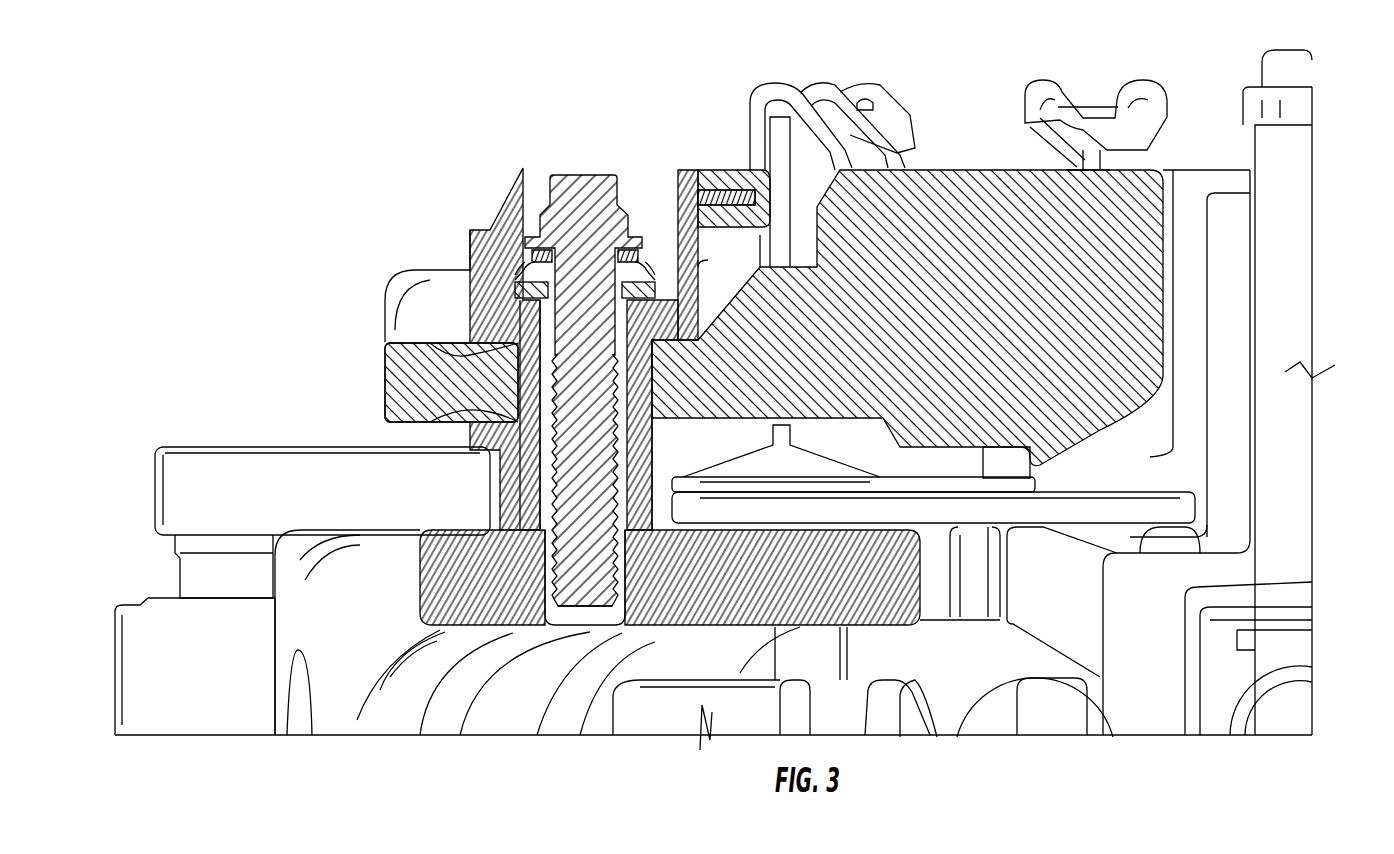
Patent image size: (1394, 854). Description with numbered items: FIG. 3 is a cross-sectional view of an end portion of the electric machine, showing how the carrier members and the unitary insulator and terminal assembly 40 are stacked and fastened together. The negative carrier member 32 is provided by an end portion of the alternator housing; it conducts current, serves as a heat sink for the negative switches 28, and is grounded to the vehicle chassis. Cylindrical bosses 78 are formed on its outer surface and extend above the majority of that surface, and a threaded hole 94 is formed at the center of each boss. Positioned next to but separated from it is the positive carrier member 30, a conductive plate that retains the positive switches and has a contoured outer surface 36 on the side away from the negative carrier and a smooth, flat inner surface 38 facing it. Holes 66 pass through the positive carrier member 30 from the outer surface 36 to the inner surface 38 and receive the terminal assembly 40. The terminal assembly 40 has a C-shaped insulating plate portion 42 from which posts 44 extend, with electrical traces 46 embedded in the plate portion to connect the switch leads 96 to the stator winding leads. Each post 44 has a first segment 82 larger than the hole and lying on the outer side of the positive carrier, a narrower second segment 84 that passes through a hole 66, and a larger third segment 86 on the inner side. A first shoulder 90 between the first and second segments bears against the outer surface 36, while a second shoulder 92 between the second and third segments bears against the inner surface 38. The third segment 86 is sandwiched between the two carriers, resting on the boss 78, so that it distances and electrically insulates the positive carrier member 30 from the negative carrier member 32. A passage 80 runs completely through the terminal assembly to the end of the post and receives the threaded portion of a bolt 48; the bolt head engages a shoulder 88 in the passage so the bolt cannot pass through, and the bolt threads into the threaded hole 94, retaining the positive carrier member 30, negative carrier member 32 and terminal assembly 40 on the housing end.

The negative switches 28 is at (1135, 488).
The positive carrier member 30 is at (951, 253).
The negative carrier member 32 is at (1147, 617).
The outer surface 36 is at (440, 337).
The inner surface 38 is at (414, 428).
The terminal assembly 40 is at (716, 213).
The plate portion 42 is at (972, 172).
The posts 44 is at (513, 377).
The electrical traces 46 is at (730, 200).
The bolt 48 is at (586, 602).
The holes 66 is at (758, 318).
The bosses 78 is at (651, 655).
The passages 80 is at (585, 442).
The first segment 82 is at (648, 378).
The second segment 84 is at (757, 177).
The third segment 86 is at (648, 452).
The shoulder 88 is at (492, 237).
The first shoulder 90 is at (531, 376).
The second shoulder 92 is at (463, 440).
The threaded hole 94 is at (546, 524).
The switch leads 96 is at (1110, 122).